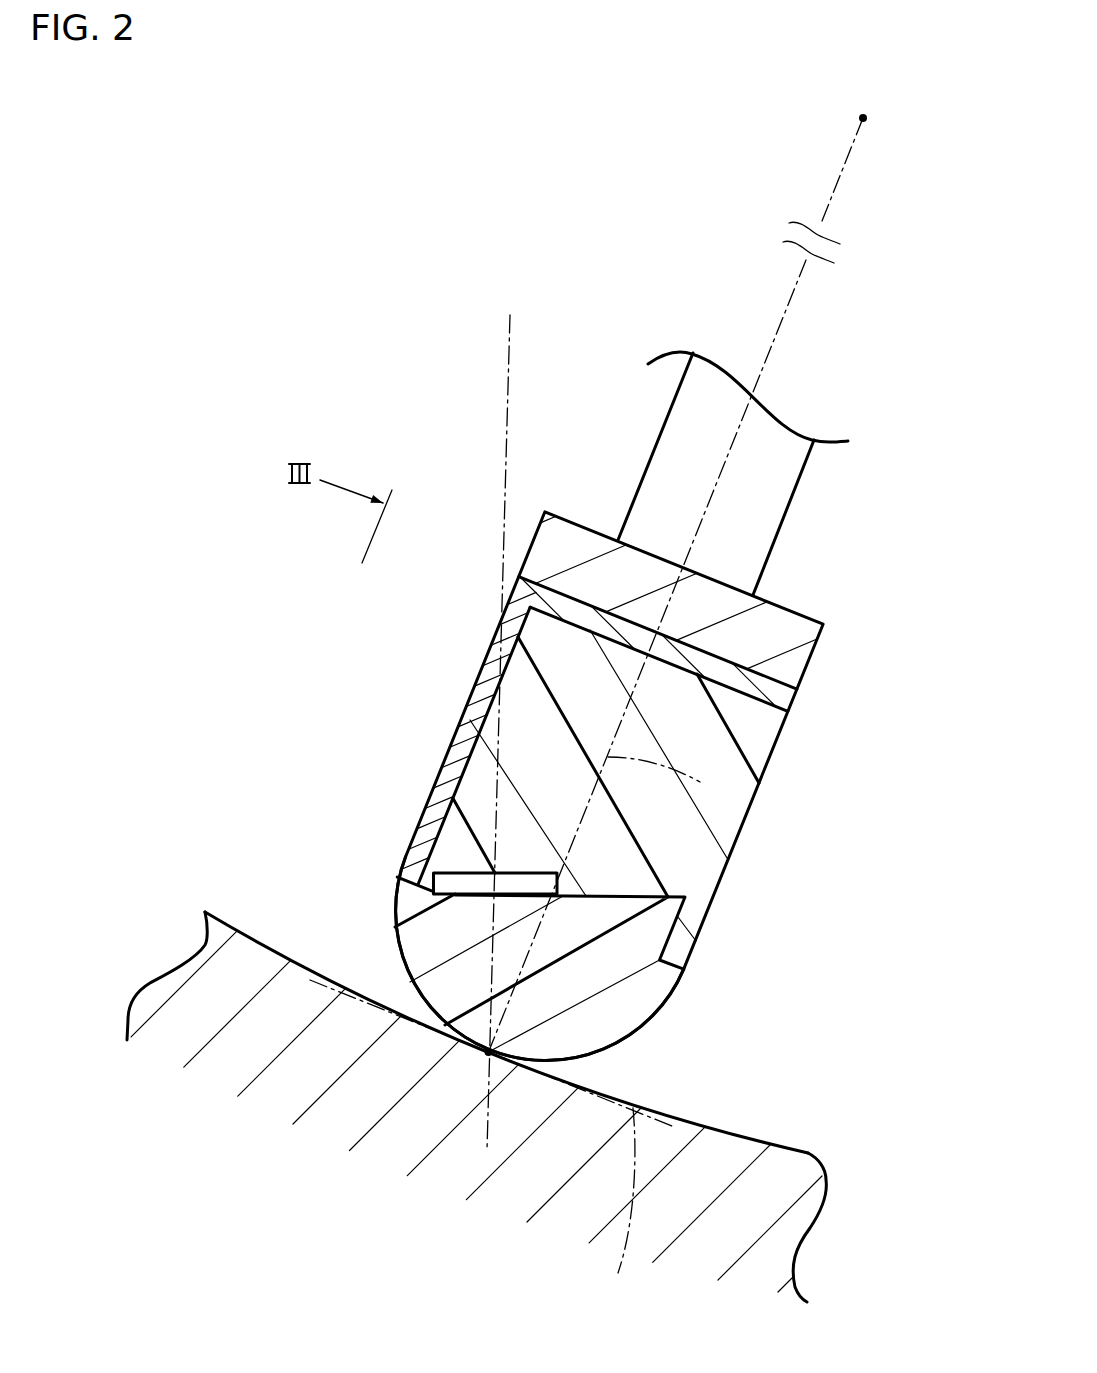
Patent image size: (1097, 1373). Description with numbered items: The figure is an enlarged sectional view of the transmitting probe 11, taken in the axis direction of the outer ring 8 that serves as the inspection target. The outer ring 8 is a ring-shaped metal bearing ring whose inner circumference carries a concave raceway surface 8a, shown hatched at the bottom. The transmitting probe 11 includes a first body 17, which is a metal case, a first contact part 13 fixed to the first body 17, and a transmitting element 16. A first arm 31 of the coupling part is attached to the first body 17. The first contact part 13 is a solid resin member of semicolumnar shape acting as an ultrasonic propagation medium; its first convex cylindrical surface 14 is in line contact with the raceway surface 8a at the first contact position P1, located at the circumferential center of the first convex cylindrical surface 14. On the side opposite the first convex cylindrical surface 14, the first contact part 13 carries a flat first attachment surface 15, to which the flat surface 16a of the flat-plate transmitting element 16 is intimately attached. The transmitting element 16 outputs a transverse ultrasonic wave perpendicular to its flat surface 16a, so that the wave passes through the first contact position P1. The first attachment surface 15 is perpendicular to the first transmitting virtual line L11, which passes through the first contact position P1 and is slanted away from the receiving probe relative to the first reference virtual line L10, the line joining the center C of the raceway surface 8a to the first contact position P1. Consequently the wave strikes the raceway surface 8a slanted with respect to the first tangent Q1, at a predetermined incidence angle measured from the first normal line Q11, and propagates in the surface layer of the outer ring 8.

The outer ring 8 is at (552, 1172).
The raceway surface 8a is at (757, 1135).
The transmitting probe 11 is at (452, 730).
The first contact part 13 is at (637, 992).
The first convex cylindrical surface 14 is at (590, 1060).
The first attachment surface 15 is at (513, 893).
The transmitting element 16 is at (467, 875).
The flat surface 16a is at (473, 893).
The first body 17 is at (485, 680).
The first arm 31 is at (783, 512).
The center C is at (860, 113).
The first reference virtual line L10 is at (780, 325).
The first transmitting virtual line L11 is at (525, 945).
The first contact position P1 is at (480, 1049).
The first tangent Q1 is at (617, 1208).
The first normal line Q11 is at (700, 782).